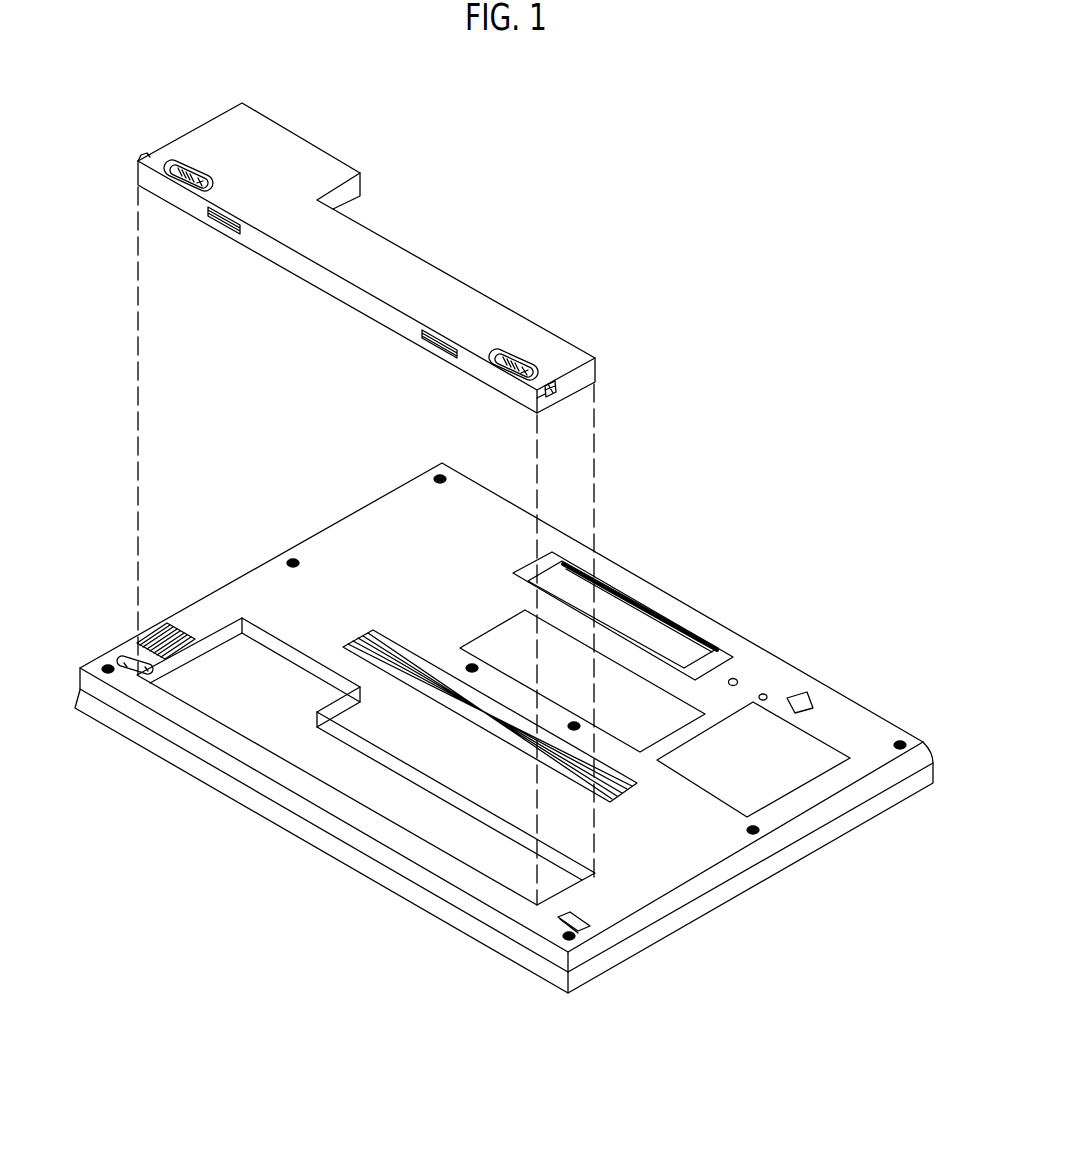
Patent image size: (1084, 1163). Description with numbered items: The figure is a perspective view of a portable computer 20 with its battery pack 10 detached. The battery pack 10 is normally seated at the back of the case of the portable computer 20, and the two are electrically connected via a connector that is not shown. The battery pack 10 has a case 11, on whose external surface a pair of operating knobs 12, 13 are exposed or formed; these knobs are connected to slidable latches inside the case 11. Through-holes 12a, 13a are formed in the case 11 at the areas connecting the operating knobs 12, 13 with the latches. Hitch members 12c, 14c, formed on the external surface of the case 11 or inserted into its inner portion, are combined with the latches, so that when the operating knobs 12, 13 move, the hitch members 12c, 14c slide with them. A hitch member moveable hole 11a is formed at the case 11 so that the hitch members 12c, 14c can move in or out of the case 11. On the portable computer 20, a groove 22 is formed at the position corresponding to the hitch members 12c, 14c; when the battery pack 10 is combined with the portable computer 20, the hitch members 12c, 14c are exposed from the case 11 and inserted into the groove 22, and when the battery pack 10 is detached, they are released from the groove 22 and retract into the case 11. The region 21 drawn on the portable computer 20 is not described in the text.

The battery pack 10 is at (376, 489).
The case 11 is at (363, 268).
The hitch member moveable hole 11a is at (552, 400).
The operating knob 12 is at (196, 152).
The through-hole 12a is at (207, 178).
The hitch member 12c is at (146, 153).
The operating knob 13 is at (505, 344).
The through-hole 13a is at (500, 352).
The hitch member 14c is at (560, 387).
The portable computer 20 is at (497, 728).
The battery mounting recess 21 is at (250, 703).
The groove 22 is at (148, 668).